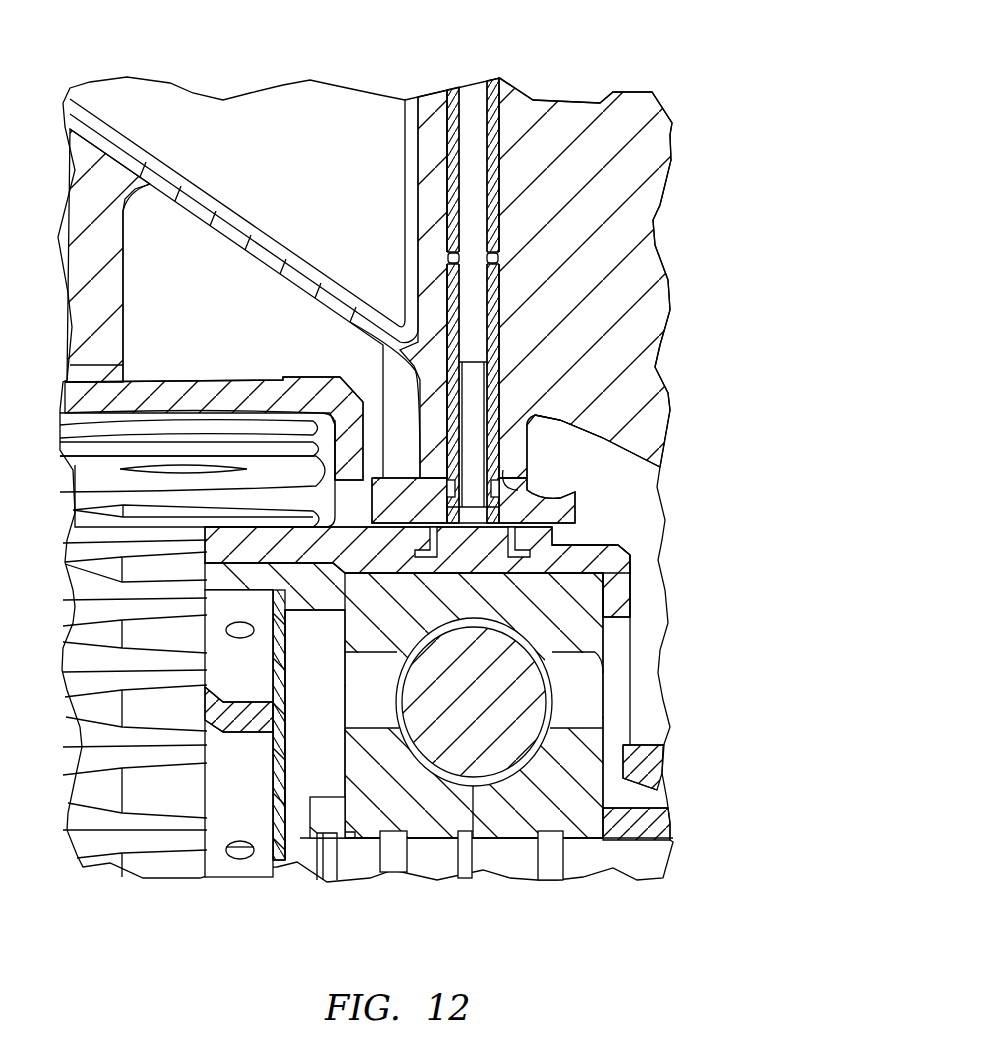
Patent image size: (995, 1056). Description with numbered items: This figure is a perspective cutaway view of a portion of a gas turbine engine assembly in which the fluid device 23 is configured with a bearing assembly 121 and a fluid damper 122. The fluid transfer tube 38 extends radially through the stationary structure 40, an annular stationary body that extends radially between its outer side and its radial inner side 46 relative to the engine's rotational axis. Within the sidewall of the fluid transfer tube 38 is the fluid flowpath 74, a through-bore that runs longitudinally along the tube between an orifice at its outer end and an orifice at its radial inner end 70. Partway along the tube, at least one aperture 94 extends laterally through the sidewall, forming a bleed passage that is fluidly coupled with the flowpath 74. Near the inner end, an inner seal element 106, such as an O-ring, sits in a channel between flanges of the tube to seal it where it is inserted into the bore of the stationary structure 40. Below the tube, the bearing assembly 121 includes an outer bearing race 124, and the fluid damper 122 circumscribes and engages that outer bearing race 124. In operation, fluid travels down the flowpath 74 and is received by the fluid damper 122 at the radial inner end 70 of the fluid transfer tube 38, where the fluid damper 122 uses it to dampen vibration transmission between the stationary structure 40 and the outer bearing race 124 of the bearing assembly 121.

The fluid flowpath 74 is at (475, 100).
The fluid transfer tube 38 is at (497, 125).
The stationary structure 40 is at (673, 165).
The aperture 94 is at (460, 264).
The inner seal element 106 is at (530, 415).
The radial inner end 70 is at (522, 494).
The radial inner side 46 is at (578, 547).
The fluid damper 122 is at (566, 560).
The bearing assembly 121 is at (605, 633).
The outer bearing race 124 is at (585, 666).
The fluid device 23 is at (553, 883).